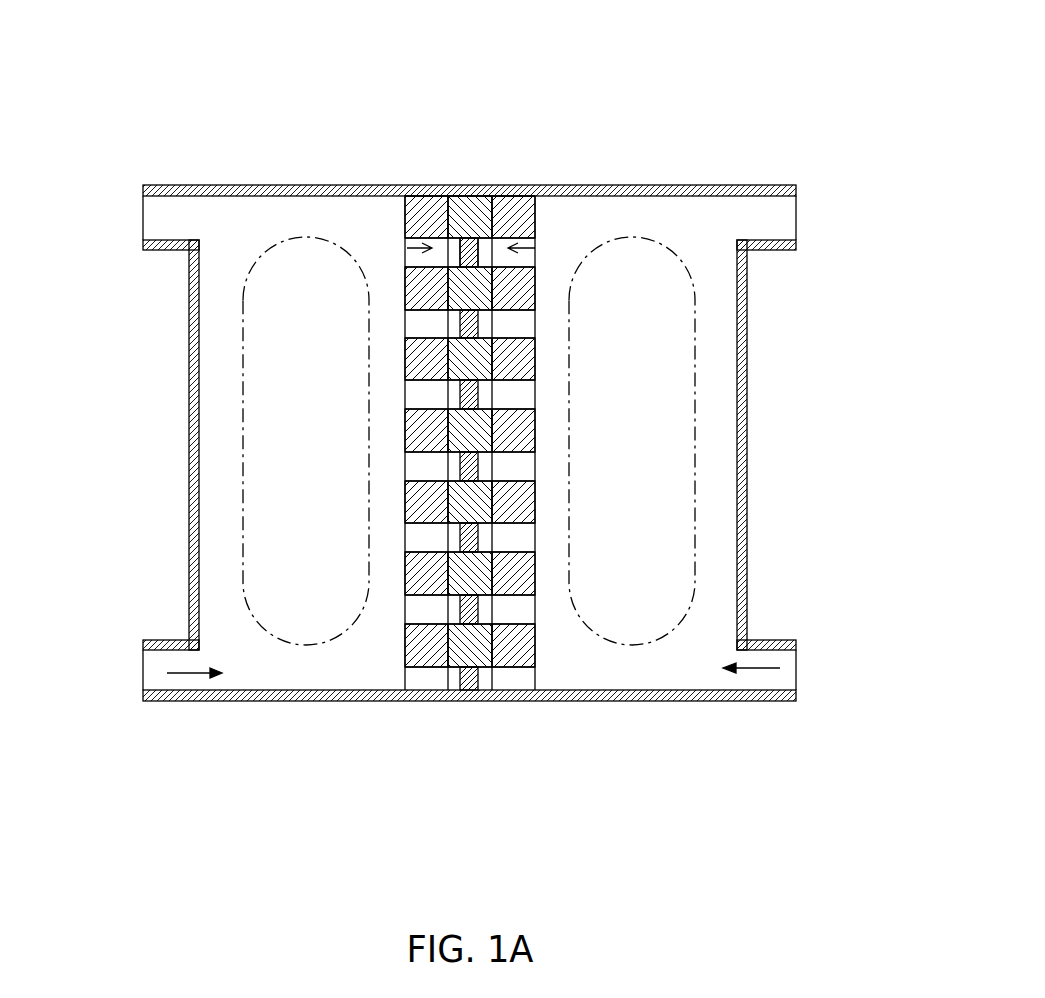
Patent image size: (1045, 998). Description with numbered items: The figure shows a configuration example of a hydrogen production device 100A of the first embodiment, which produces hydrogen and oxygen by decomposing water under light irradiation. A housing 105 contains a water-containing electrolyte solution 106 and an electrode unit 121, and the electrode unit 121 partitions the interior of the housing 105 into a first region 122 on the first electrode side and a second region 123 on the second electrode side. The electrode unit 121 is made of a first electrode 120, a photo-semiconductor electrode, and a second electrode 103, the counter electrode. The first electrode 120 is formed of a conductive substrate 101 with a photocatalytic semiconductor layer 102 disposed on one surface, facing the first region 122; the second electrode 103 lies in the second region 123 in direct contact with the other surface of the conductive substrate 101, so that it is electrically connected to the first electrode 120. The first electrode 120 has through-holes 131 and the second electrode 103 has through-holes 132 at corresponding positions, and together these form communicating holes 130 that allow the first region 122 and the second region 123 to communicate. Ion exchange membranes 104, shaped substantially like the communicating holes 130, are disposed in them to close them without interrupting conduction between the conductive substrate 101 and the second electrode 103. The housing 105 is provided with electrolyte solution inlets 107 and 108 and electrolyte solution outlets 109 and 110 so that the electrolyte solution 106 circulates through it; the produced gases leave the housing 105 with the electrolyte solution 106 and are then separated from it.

The hydrogen production device 100A is at (678, 96).
The conductive substrate 101 is at (472, 648).
The photocatalytic semiconductor layer 102 is at (430, 650).
The second electrode 103 is at (513, 650).
The ion exchange membrane 104 is at (478, 610).
The housing 105 is at (190, 346).
The electrolyte solution 106 is at (224, 556).
The electrolyte solution inlet 107 is at (157, 666).
The electrolyte solution inlet 108 is at (780, 680).
The electrolyte solution outlet 109 is at (163, 219).
The electrolyte solution outlet 110 is at (782, 220).
The first electrode 120 is at (436, 507).
The electrode unit 121 is at (469, 531).
The first region 122 is at (297, 239).
The second region 123 is at (617, 239).
The communicating hole 130 is at (470, 163).
The through-hole 131 is at (407, 248).
The through-hole 132 is at (522, 186).